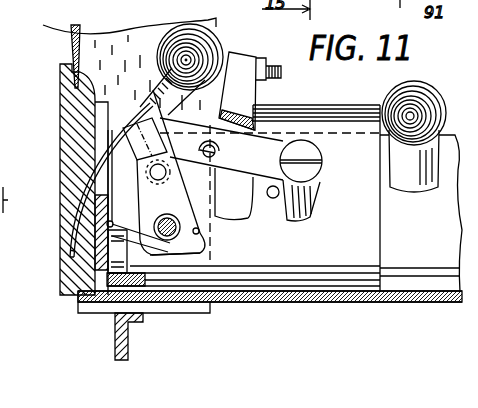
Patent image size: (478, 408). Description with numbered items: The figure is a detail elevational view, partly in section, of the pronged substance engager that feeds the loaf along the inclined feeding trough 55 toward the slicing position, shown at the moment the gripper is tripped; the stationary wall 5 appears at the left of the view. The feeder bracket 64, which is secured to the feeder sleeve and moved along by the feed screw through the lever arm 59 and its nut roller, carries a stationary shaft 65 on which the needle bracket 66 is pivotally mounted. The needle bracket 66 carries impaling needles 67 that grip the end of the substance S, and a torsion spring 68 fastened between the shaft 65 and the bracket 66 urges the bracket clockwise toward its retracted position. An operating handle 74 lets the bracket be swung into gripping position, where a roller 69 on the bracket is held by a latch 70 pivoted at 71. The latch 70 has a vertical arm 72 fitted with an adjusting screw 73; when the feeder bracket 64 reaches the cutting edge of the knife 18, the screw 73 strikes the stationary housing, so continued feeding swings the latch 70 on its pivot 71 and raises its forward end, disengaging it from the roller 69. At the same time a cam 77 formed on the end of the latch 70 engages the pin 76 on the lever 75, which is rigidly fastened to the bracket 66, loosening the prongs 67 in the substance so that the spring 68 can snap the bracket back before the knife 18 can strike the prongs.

The wall 5 is at (62, 71).
The knife 18 is at (10, 23).
The feeding trough 55 is at (393, 308).
The lever arm 59 is at (427, 98).
The feeder bracket 64 is at (348, 110).
The shaft 65 is at (207, 247).
The needle bracket 66 is at (178, 205).
The impaling needles 67 is at (80, 185).
The torsion spring 68 is at (188, 250).
The roller 69 is at (171, 172).
The latch 70 is at (255, 151).
The pivot 71 is at (309, 170).
The vertical arm 72 is at (233, 55).
The adjusting screw 73 is at (263, 60).
The operating handle 74 is at (207, 45).
The lever 75 is at (192, 158).
The pin 76 is at (229, 158).
The cam 77 is at (160, 93).